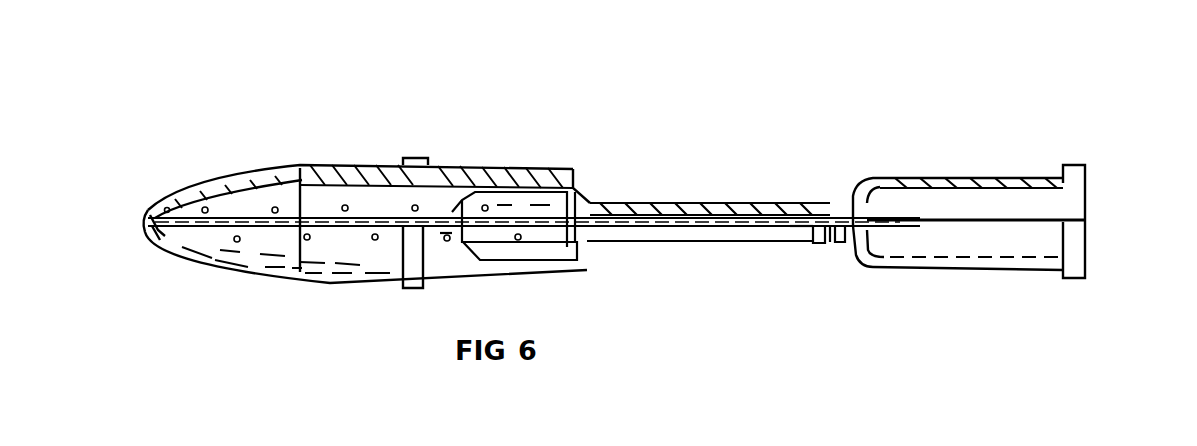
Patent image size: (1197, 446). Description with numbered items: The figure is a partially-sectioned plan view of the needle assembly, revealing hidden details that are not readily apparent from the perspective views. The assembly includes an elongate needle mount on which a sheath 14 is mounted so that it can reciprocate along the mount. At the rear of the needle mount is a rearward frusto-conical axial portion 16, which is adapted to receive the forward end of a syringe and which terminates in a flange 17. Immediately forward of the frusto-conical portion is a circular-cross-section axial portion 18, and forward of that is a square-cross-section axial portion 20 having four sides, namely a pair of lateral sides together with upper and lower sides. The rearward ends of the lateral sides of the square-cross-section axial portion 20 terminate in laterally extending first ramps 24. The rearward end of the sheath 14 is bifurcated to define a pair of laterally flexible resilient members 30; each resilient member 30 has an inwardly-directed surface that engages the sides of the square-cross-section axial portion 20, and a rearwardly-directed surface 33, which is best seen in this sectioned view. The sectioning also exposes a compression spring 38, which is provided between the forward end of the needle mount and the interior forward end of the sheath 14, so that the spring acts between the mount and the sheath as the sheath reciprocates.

The sheath 14 is at (287, 163).
The rearward frusto-conical axial portion 16 is at (958, 187).
The flange 17 is at (1080, 162).
The circular-cross-section axial portion 18 is at (840, 185).
The square-cross-section axial portion 20 is at (717, 203).
The first ramps 24 is at (825, 203).
The resilient members 30 is at (586, 175).
The rearwardly-directed surface 33 is at (588, 250).
The compression spring 38 is at (237, 242).